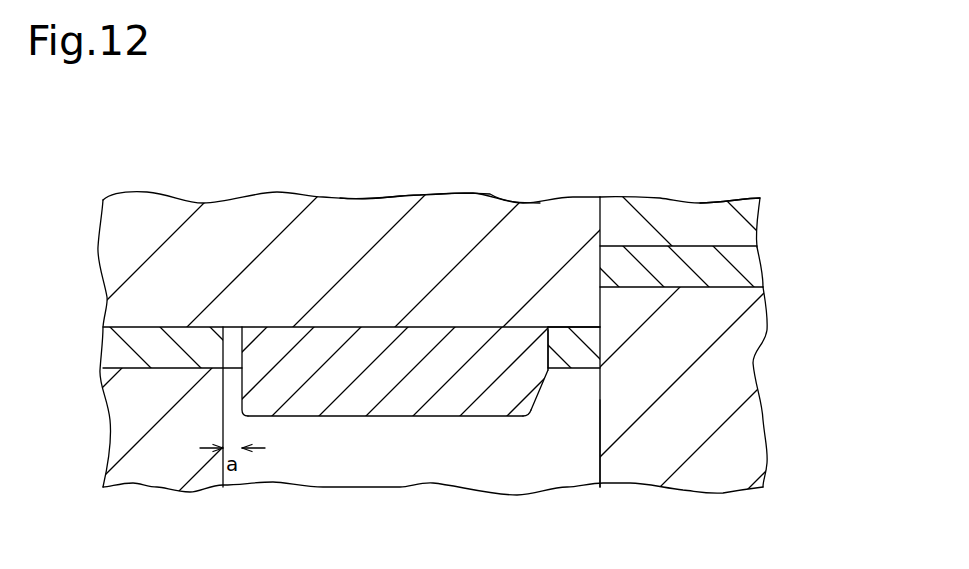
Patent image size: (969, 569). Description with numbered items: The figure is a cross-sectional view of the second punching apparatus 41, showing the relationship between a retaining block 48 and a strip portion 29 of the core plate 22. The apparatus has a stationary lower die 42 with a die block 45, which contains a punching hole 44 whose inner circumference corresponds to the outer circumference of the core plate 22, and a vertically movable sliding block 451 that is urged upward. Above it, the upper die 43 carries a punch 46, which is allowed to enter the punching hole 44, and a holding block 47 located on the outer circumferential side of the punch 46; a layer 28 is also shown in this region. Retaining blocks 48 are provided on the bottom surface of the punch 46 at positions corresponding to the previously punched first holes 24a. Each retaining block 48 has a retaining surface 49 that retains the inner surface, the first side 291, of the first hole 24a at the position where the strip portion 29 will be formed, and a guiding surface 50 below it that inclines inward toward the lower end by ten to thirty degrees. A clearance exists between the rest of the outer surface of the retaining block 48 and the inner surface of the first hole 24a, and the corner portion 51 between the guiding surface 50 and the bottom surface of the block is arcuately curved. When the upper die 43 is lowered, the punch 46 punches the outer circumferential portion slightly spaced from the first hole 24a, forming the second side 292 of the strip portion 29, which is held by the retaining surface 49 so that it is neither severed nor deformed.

The second punching apparatus 41 is at (431, 174).
The punch 46 is at (504, 196).
The upper die 43 is at (681, 196).
The holding block 47 is at (742, 203).
The sealing layer 28 is at (758, 262).
The first hole 24a is at (238, 348).
The core plate 22 is at (103, 343).
The retaining surface 49 is at (570, 343).
The strip portion 29 is at (568, 327).
The first side 291 is at (548, 357).
The second side 292 is at (602, 343).
The guiding surface 50 is at (541, 398).
The retaining block 48 is at (433, 412).
The corner portion 51 is at (533, 418).
The die block 45 is at (758, 423).
The sliding block 451 is at (160, 490).
The punching hole 44 is at (600, 485).
The lower die 42 is at (704, 494).